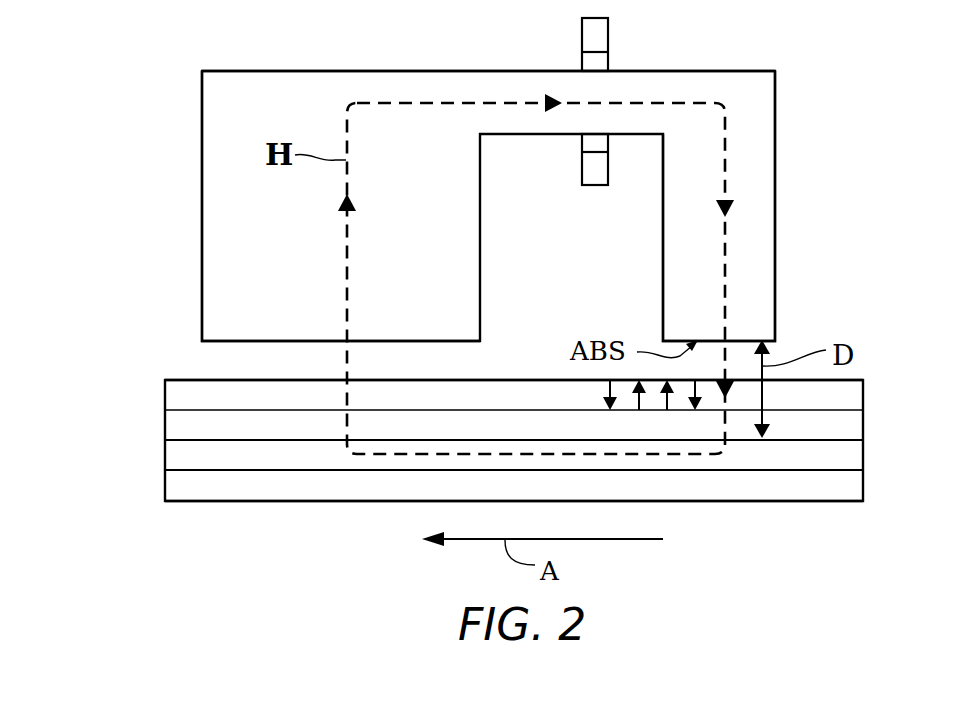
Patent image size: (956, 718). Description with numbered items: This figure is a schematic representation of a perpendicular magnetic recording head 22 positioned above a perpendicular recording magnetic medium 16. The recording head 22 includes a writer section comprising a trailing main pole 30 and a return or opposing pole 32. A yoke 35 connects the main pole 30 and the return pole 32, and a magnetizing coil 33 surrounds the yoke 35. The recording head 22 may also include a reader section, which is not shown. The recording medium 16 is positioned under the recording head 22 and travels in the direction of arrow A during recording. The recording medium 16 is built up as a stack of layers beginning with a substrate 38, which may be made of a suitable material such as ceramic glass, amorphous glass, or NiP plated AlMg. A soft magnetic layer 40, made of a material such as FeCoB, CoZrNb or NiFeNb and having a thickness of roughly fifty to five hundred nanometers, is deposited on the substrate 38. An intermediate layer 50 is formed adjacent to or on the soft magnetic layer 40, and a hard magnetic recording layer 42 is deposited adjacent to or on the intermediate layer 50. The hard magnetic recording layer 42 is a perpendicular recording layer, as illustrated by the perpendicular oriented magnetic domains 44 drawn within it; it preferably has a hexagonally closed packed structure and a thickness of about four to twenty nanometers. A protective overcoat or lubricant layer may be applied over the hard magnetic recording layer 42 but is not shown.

The perpendicular recording magnetic medium 16 is at (142, 380).
The perpendicular magnetic recording head 22 is at (155, 84).
The trailing main pole 30 is at (675, 262).
The return pole 32 is at (216, 193).
The magnetizing coil 33 is at (582, 34).
The yoke 35 is at (645, 80).
The substrate 38 is at (172, 488).
The soft magnetic layer 40 is at (172, 457).
The hard magnetic recording layer 42 is at (180, 395).
The perpendicular oriented magnetic domains 44 is at (610, 390).
The intermediate layer 50 is at (172, 424).